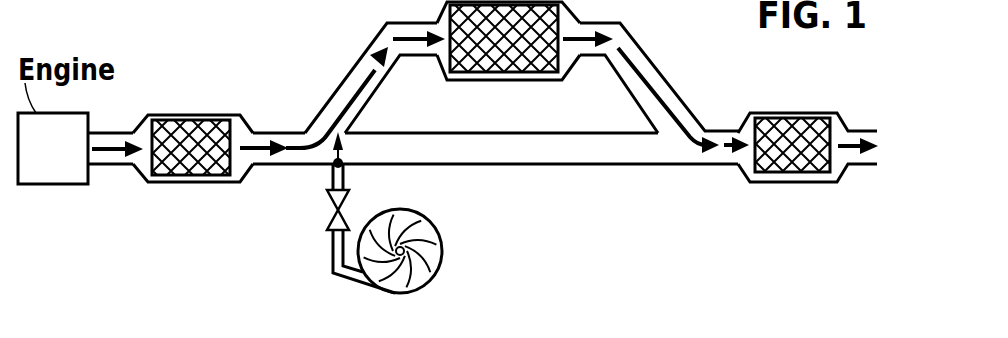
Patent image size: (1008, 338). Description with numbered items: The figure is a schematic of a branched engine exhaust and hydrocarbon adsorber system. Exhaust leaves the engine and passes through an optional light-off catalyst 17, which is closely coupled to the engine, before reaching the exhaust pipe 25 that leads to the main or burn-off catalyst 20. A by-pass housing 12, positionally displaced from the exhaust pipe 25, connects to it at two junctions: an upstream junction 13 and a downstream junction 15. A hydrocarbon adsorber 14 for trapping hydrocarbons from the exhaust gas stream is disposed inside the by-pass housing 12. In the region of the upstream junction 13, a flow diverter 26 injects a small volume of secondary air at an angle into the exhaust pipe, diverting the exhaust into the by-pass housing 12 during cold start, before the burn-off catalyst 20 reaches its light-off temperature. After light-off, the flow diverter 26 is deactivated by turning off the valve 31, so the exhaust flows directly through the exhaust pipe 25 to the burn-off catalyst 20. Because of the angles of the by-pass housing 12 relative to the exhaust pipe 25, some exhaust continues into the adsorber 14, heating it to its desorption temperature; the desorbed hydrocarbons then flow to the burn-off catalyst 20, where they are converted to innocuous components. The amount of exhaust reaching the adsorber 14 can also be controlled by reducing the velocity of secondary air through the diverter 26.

The by-pass housing 12 is at (366, 35).
The upstream junction 13 is at (297, 112).
The hydrocarbon adsorber 14 is at (509, 63).
The downstream junction 15 is at (722, 104).
The light-off catalyst 17 is at (178, 123).
The burn-off catalyst 20 is at (770, 169).
The exhaust pipe 25 is at (560, 166).
The flow diverter 26 is at (460, 264).
The valve 31 is at (330, 194).